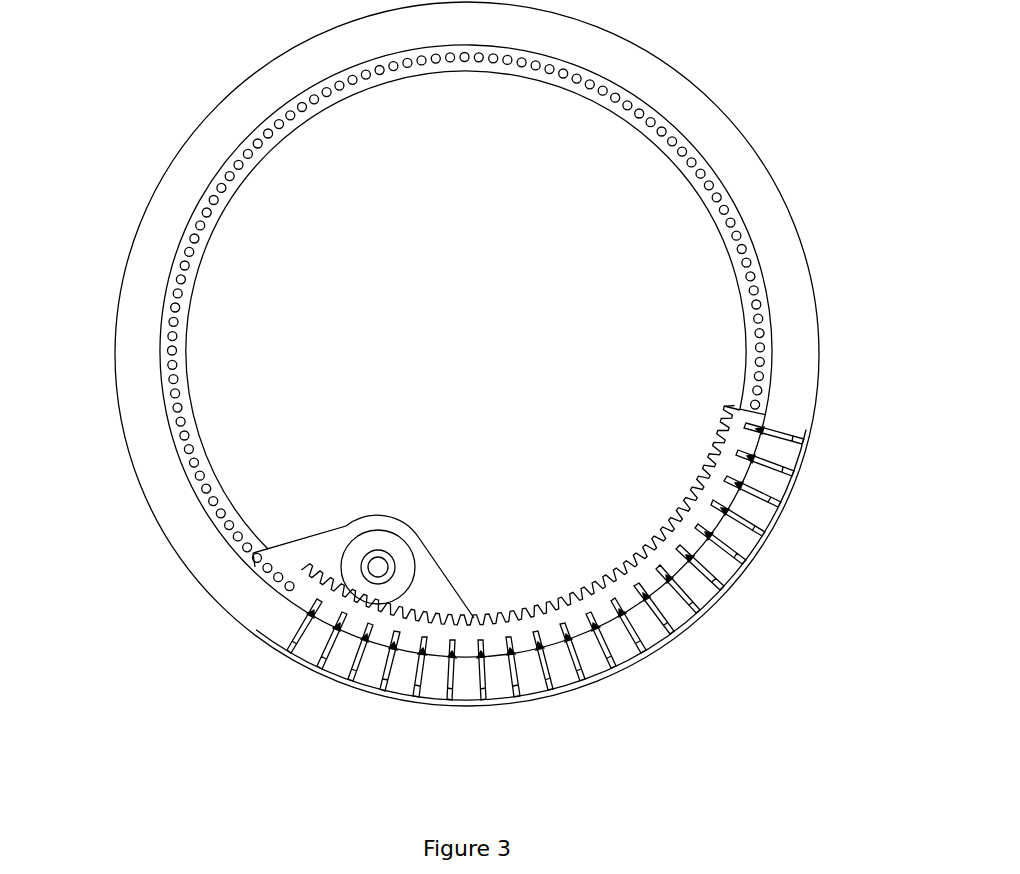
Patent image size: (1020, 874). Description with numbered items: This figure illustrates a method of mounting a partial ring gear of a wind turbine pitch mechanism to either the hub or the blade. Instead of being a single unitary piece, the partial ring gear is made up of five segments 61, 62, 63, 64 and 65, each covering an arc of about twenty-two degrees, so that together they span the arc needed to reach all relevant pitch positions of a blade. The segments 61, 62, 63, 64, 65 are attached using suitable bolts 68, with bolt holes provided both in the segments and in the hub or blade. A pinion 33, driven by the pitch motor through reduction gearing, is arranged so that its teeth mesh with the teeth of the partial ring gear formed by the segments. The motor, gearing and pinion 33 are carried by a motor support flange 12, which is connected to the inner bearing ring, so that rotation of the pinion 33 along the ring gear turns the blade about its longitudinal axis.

The motor support flange 12 is at (302, 568).
The pinion 33 is at (358, 548).
The segment 61 is at (383, 638).
The segment 62 is at (493, 638).
The segment 63 is at (593, 609).
The segment 64 is at (668, 556).
The segment 65 is at (727, 466).
The bolts 68 is at (348, 697).